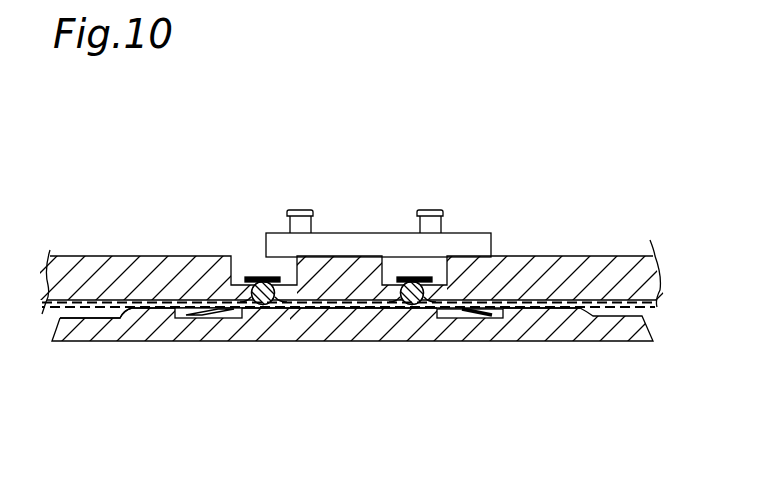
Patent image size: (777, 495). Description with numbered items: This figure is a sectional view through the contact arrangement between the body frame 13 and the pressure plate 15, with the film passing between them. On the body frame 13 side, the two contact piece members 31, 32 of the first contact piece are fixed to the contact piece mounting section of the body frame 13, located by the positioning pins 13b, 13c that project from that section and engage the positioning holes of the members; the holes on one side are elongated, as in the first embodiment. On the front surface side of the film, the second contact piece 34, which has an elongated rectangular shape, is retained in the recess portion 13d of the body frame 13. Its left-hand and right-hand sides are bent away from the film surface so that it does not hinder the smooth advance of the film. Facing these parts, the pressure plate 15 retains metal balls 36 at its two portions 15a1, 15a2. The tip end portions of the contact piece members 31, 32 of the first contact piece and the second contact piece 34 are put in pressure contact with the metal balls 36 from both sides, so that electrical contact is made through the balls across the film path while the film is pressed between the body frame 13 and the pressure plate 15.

The body frame 13 is at (547, 341).
The positioning pin 13b is at (432, 210).
The positioning pin 13c is at (298, 210).
The recess portion 13d is at (164, 310).
The pressure plate 15 is at (590, 256).
The portion of the pressure plate 15a1 is at (378, 317).
The portion of the pressure plate 15a2 is at (310, 316).
The contact piece member 31 is at (432, 277).
The contact piece member 32 is at (253, 277).
The second contact piece 34 is at (463, 318).
The metal ball 36 is at (266, 277).